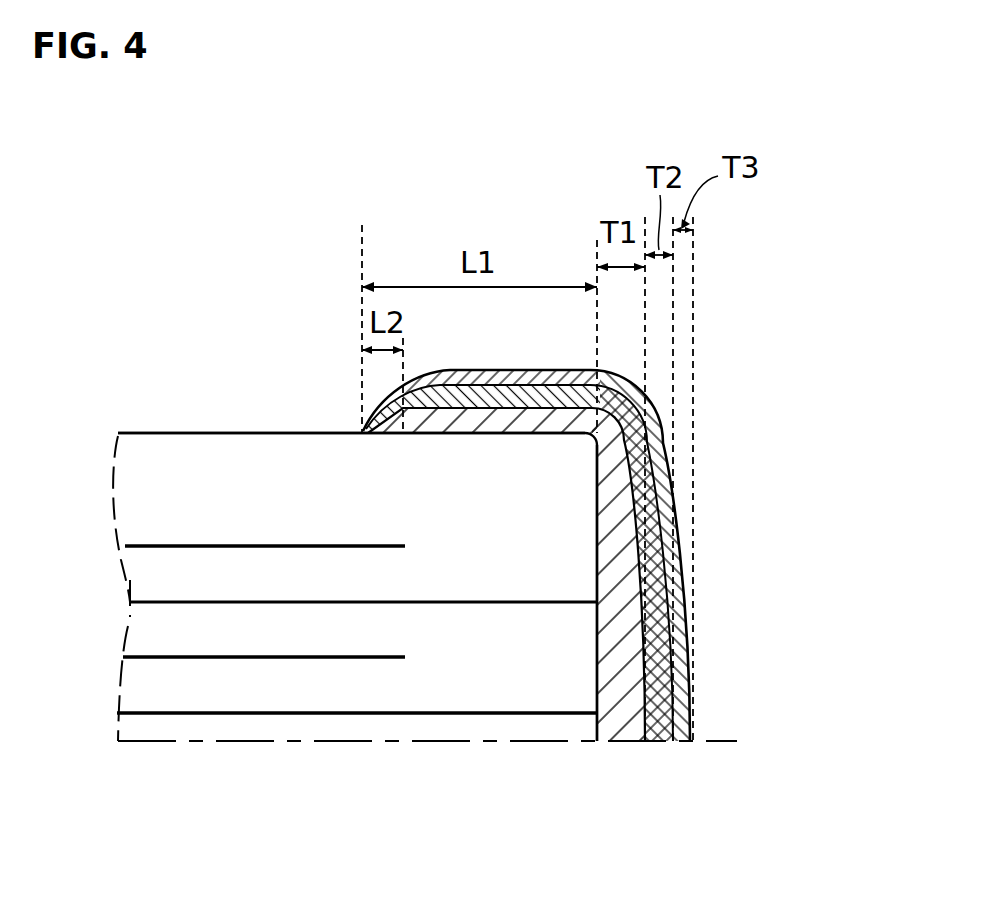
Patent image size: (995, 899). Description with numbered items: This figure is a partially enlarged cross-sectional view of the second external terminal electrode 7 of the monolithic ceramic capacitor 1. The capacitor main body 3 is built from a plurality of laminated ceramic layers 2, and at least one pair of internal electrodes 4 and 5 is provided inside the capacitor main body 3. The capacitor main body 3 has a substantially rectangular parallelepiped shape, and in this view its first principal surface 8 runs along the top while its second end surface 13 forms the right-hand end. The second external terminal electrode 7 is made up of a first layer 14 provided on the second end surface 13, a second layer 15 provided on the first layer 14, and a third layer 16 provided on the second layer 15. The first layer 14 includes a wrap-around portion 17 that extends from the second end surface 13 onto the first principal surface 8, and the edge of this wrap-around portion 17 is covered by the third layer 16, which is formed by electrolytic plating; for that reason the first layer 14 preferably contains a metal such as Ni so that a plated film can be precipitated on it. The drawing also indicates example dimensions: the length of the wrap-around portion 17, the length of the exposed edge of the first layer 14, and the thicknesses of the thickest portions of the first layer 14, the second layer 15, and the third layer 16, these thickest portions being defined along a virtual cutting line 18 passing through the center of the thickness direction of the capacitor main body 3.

The monolithic ceramic capacitor 1 is at (187, 243).
The ceramic layer 2 is at (222, 638).
The capacitor main body 3 is at (114, 430).
The internal electrode 4 is at (290, 656).
The internal electrode 5 is at (478, 604).
The second external terminal electrode 7 is at (823, 532).
The first principal surface 8 is at (275, 432).
The second end surface 13 is at (600, 722).
The first layer 14 is at (629, 558).
The second layer 15 is at (666, 615).
The third layer 16 is at (689, 675).
The wrap-around portion 17 is at (493, 418).
The virtual cutting line 18 is at (300, 742).